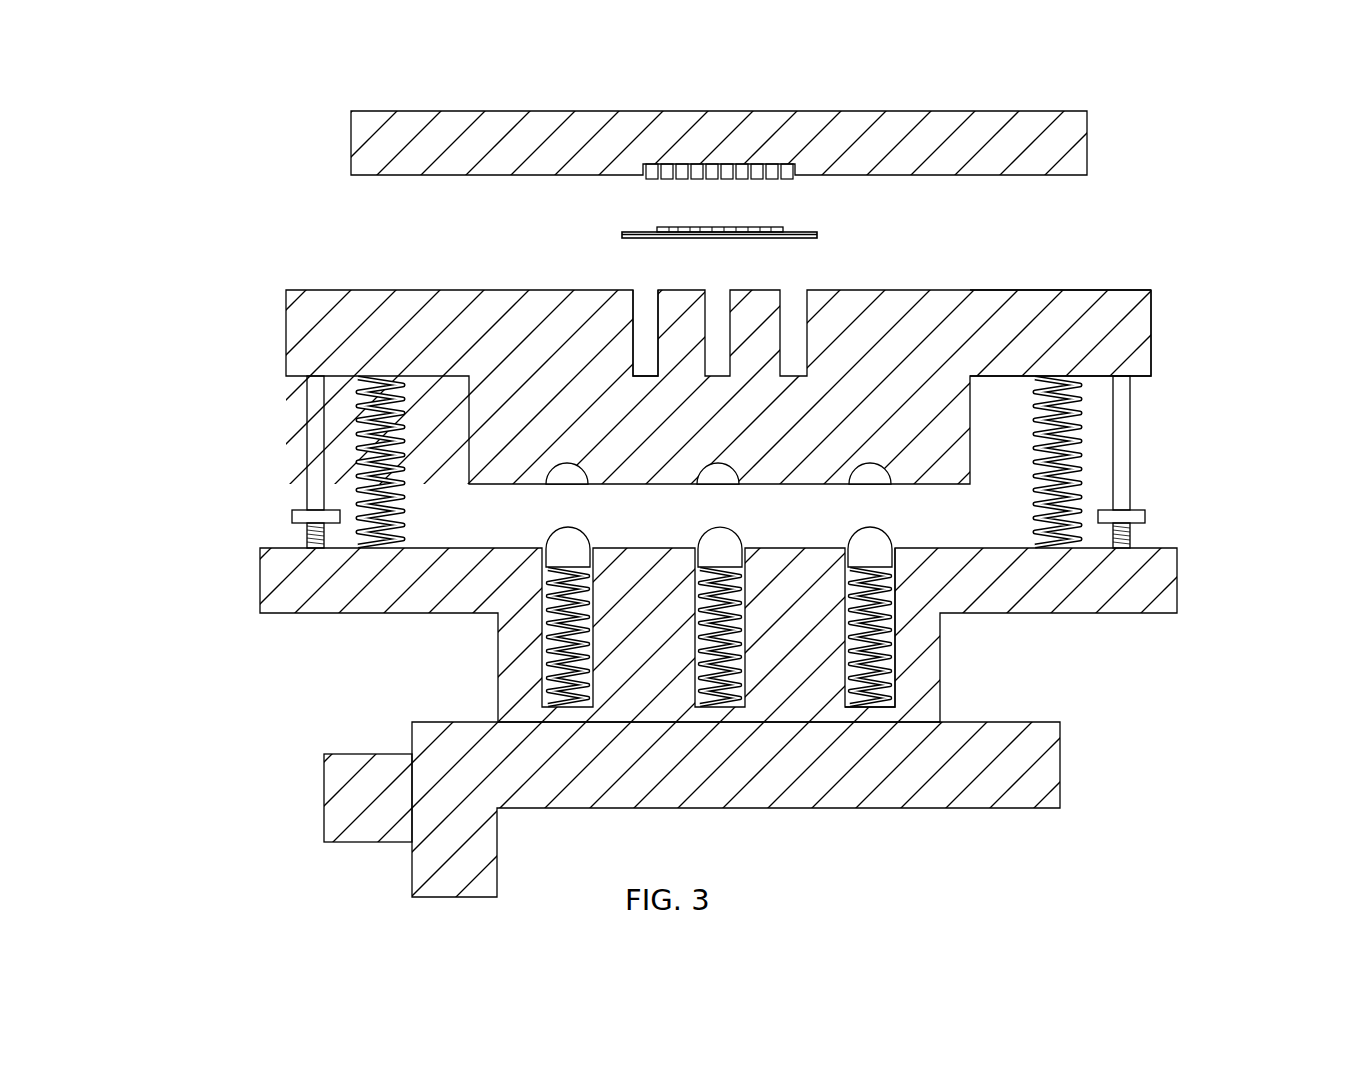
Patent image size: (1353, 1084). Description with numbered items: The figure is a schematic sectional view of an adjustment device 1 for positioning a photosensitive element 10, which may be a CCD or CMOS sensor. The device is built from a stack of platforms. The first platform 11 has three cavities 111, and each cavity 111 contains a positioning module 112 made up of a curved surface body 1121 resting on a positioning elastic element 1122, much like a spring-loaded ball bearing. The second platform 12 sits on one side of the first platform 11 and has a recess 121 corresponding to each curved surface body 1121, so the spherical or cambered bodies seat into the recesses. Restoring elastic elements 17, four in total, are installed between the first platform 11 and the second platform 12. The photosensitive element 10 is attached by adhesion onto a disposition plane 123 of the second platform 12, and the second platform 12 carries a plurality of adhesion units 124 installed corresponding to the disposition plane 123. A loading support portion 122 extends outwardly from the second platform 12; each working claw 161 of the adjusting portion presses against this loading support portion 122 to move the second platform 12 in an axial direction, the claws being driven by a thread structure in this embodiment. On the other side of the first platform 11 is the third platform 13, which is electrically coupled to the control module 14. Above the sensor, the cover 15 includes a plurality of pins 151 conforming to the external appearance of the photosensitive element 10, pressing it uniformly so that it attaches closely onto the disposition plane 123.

The adjustment device 1 is at (245, 126).
The photosensitive element 10 is at (627, 232).
The first platform 11 is at (1137, 590).
The cavity 111 is at (897, 685).
The positioning module 112 is at (497, 620).
The curved surface body 1121 is at (555, 567).
The positioning elastic element 1122 is at (547, 640).
The second platform 12 is at (843, 335).
The recess 121 is at (565, 462).
The loading support portion 122 is at (1093, 332).
The disposition plane 123 is at (1040, 298).
The adhesion unit 124 is at (646, 332).
The third platform 13 is at (1023, 777).
The control module 14 is at (358, 803).
The cover 15 is at (1040, 148).
The pin 151 is at (780, 173).
The working claw 161 is at (317, 460).
The restoring elastic element 17 is at (1077, 457).